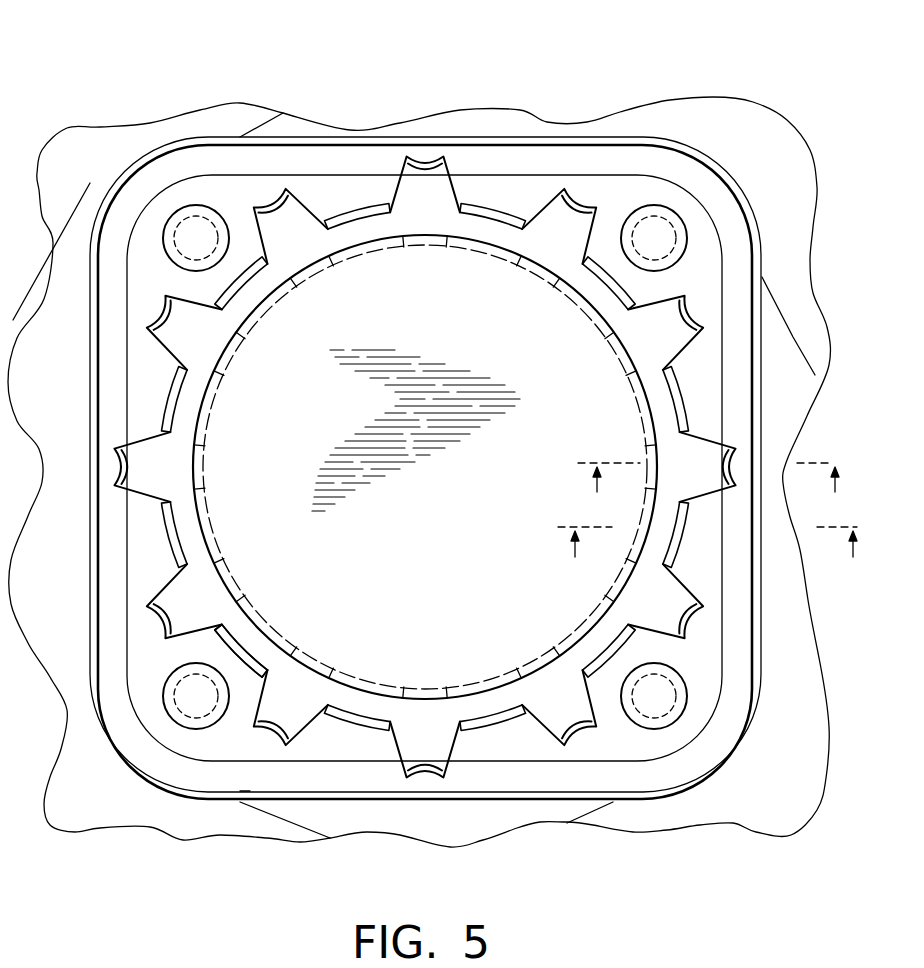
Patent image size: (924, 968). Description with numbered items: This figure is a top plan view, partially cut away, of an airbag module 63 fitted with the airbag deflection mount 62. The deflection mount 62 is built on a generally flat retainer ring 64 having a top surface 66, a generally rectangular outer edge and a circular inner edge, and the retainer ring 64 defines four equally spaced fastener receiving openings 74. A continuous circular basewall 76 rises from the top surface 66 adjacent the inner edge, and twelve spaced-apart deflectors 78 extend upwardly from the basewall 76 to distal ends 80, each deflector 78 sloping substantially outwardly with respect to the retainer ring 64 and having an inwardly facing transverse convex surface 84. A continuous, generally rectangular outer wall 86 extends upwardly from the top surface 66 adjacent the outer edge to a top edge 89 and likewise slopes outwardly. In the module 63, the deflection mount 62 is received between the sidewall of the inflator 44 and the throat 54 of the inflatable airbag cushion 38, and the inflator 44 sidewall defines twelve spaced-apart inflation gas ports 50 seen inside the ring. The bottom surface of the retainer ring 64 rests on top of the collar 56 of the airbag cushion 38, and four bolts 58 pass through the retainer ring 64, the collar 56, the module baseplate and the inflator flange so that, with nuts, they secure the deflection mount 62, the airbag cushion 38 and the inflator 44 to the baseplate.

The inflatable airbag cushion 38 is at (436, 479).
The inflator 44 is at (436, 447).
The inflation gas ports 50 is at (368, 254).
The throat 54 is at (790, 122).
The collar 56 is at (795, 333).
The bolts 58 is at (190, 207).
The airbag deflection mount 62 is at (568, 122).
The airbag module 63 is at (436, 450).
The retainer ring 64 is at (255, 745).
The top surface 66 is at (242, 765).
The fastener receiving openings 74 is at (163, 230).
The basewall 76 is at (247, 640).
The deflectors 78 is at (305, 220).
The distal ends 80 is at (430, 163).
The transverse convex surface 84 is at (310, 266).
The outer wall 86 is at (534, 780).
The top edge 89 is at (630, 792).